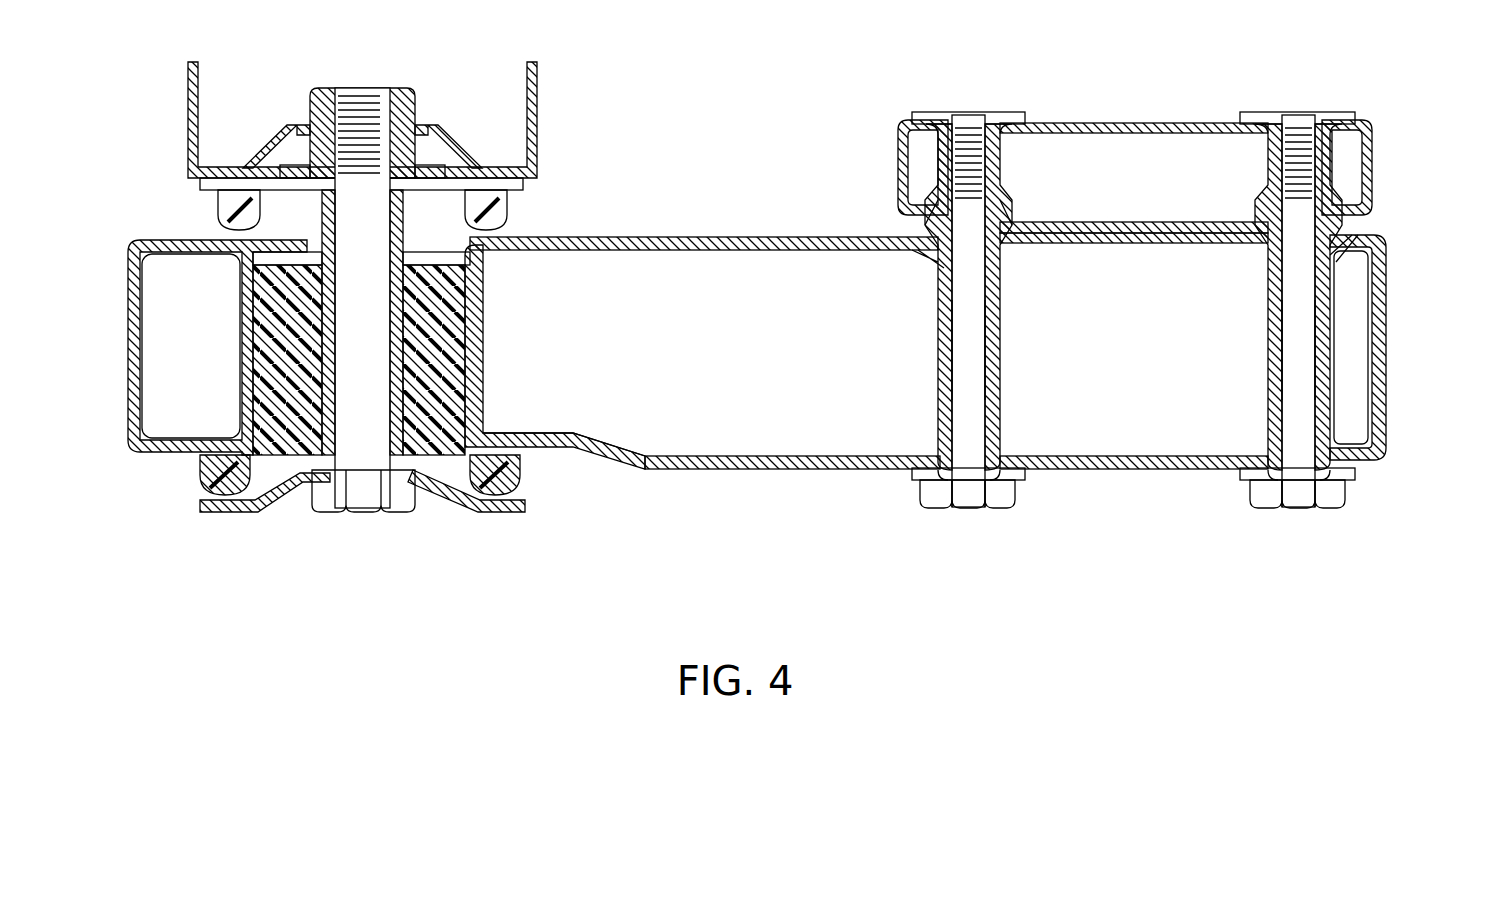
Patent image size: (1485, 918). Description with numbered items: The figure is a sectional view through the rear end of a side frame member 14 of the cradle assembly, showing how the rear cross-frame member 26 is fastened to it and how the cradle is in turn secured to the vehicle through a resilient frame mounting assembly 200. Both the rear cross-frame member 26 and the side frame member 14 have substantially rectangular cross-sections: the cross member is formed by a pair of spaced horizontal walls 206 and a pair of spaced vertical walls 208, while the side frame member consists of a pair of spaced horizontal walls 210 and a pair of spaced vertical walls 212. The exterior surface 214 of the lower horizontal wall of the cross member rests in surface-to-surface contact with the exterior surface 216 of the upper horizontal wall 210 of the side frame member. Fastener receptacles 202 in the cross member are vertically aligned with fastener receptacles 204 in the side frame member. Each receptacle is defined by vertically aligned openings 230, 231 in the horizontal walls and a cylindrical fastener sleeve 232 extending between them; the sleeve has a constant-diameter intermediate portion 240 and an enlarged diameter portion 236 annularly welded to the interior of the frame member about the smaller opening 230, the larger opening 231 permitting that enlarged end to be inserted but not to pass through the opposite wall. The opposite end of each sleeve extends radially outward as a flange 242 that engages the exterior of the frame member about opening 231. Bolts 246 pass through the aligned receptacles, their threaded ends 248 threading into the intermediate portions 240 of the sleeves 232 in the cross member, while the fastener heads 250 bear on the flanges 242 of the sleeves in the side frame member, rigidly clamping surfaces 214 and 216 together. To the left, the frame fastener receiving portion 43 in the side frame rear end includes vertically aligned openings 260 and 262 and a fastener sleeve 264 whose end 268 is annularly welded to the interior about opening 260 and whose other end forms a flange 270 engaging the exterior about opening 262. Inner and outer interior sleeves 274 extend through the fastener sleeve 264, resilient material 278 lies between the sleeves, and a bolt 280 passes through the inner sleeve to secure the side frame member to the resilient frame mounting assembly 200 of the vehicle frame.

The side frame member 14 is at (1151, 327).
The rear cross-frame member 26 is at (1151, 176).
The frame fastener receiving portion 43 is at (398, 330).
The resilient frame mounting assembly 200 is at (545, 117).
The fastener receptacle 202 is at (948, 107).
The fastener receptacle 204 is at (1146, 548).
The horizontal wall 206 is at (1090, 125).
The vertical wall 208 is at (900, 190).
The horizontal wall 210 is at (637, 234).
The vertical wall 212 is at (137, 337).
The exterior surface 214 is at (1170, 248).
The exterior surface 216 is at (1150, 225).
The opening 230 is at (948, 250).
The opening 231 is at (905, 140).
The fastener sleeve 232 is at (990, 180).
The enlarged diameter portion 236 is at (1003, 215).
The intermediate portion 240 is at (995, 150).
The flange 242 is at (1015, 480).
The bolt 246 is at (972, 495).
The threaded end 248 is at (972, 128).
The fastener head 250 is at (932, 490).
The opening 260 is at (303, 255).
The opening 262 is at (240, 432).
The fastener sleeve 264 is at (485, 345).
The end 268 is at (480, 296).
The flange 270 is at (540, 455).
The interior sleeve 274 is at (490, 510).
The resilient material 278 is at (276, 320).
The bolt 280 is at (348, 472).